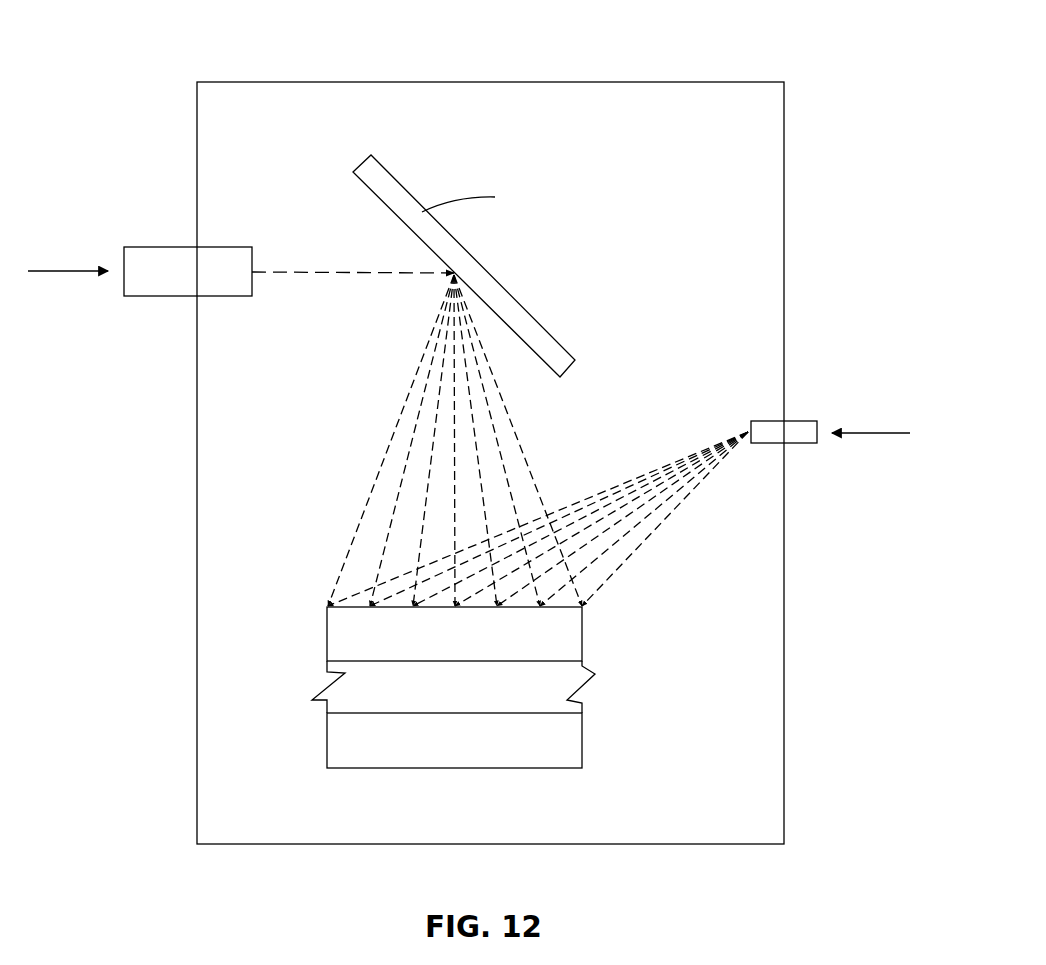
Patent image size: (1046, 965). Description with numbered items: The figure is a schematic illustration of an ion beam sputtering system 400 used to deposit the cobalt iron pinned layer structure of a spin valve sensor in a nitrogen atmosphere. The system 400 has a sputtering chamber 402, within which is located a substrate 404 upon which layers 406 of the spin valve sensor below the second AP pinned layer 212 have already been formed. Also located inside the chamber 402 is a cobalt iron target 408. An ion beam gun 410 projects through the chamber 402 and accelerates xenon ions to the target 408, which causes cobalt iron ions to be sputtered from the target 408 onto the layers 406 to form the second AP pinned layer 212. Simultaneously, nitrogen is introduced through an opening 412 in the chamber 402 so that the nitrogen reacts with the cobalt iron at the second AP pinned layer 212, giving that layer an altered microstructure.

The sputtering system 400 is at (647, 62).
The sputtering chamber 402 is at (730, 844).
The substrate 404 is at (578, 743).
The layers 406 is at (578, 667).
The second AP pinned layer 212 is at (578, 628).
The cobalt iron target 408 is at (532, 318).
The ion beam gun 410 is at (150, 296).
The opening 412 is at (813, 443).